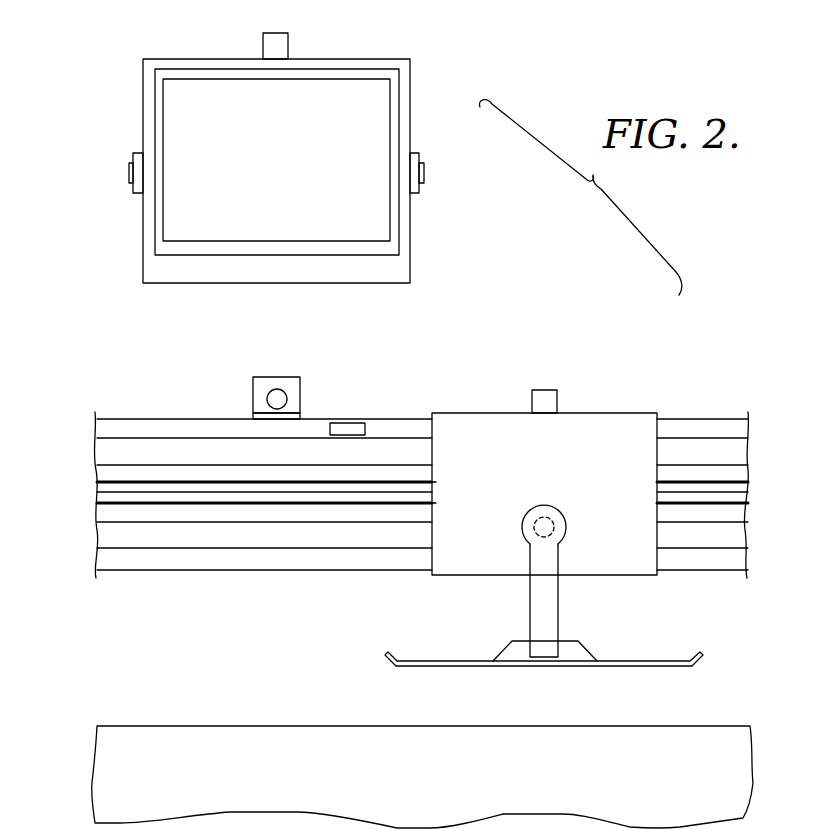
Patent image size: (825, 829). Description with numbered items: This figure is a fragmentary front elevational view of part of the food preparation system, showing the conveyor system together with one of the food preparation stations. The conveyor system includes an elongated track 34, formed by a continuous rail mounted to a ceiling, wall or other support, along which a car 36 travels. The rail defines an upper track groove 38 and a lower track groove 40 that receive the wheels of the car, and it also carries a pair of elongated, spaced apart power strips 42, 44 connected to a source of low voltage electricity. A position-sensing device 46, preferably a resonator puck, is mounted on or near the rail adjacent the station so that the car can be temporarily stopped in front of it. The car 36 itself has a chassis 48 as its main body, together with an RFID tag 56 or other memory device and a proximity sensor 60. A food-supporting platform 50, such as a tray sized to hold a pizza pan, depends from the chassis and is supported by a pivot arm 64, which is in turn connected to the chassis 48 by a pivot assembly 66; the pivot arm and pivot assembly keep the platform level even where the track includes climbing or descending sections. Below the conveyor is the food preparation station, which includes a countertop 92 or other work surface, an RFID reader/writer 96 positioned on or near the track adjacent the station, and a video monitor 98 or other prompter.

The track 34 is at (707, 408).
The car 36 is at (544, 492).
The upper track groove 38 is at (737, 448).
The lower track groove 40 is at (730, 538).
The power strip 42 is at (738, 488).
The power strip 44 is at (740, 500).
The position-sensing device 46 is at (342, 427).
The chassis 48 is at (495, 422).
The food-supporting platform 50 is at (425, 660).
The RFID tag 56 is at (544, 397).
The proximity sensor 60 is at (432, 490).
The pivot arm 64 is at (553, 592).
The pivot assembly 66 is at (555, 522).
The countertop 92 is at (250, 726).
The RFID reader/writer 96 is at (265, 383).
The video monitor 98 is at (403, 88).